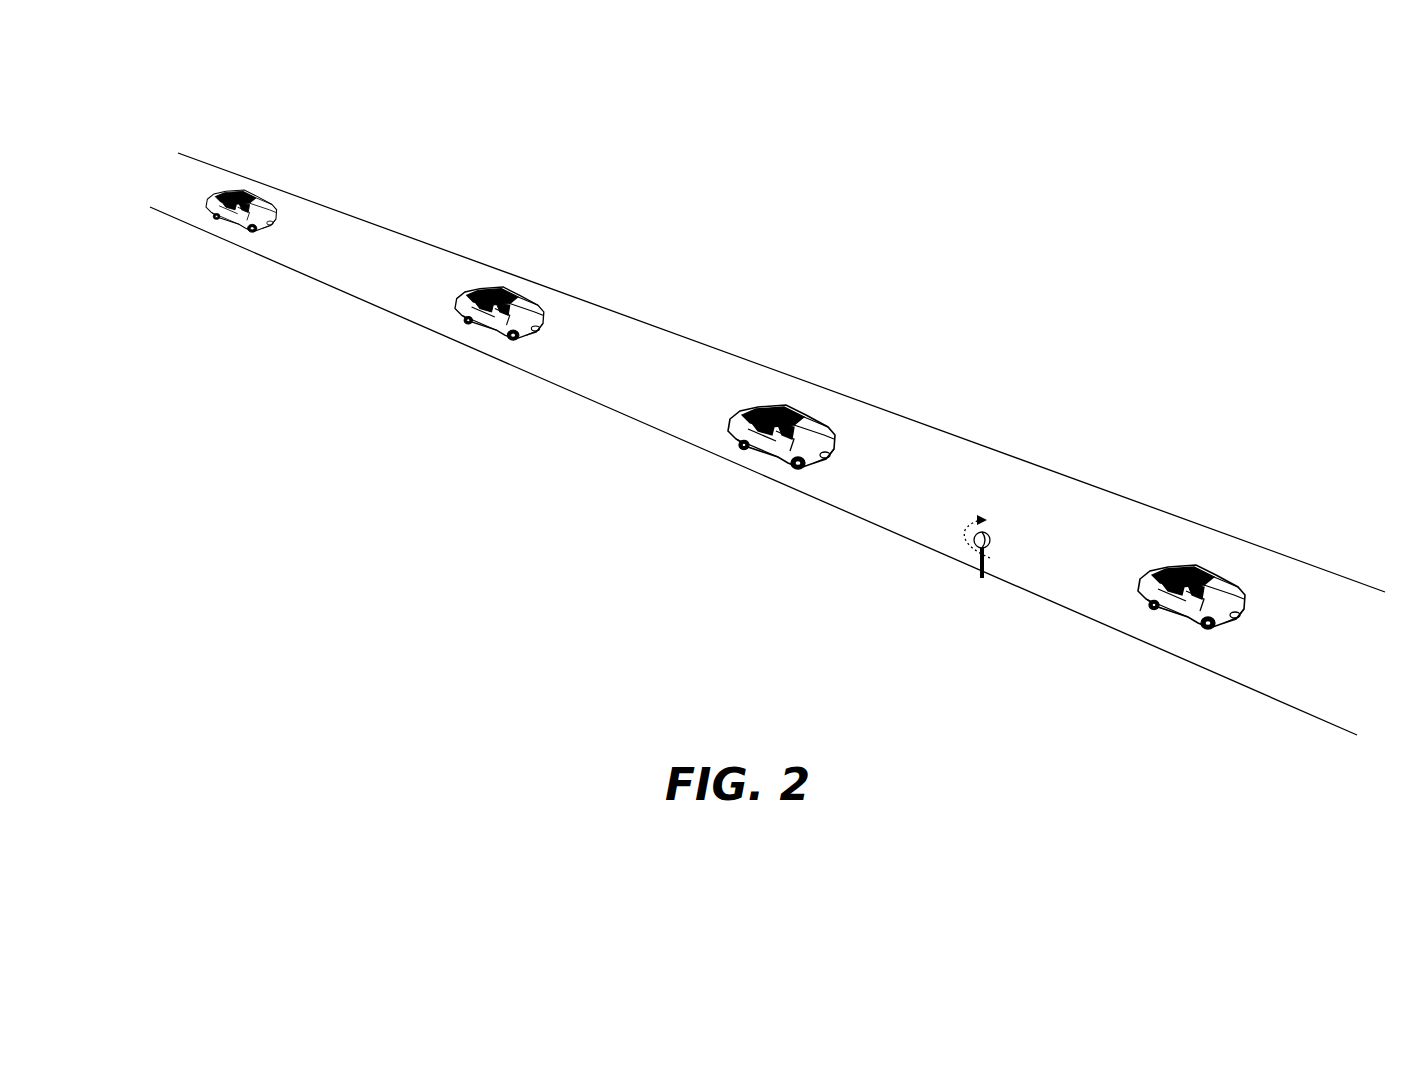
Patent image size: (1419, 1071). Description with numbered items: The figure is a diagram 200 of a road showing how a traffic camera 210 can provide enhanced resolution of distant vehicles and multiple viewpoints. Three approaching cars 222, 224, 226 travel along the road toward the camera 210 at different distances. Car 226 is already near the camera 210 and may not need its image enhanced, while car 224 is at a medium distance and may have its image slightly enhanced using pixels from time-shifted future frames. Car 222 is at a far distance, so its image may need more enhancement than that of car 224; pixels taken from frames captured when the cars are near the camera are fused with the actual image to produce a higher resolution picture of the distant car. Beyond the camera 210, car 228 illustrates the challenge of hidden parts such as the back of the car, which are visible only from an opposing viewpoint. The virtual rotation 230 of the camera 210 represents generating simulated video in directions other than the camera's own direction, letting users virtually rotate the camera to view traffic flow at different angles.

The diagram 200 is at (1230, 148).
The traffic camera 210 is at (1002, 536).
The car 222 is at (208, 188).
The car 224 is at (458, 290).
The car 226 is at (750, 397).
The car 228 is at (1214, 560).
The virtual rotation 230 is at (958, 524).